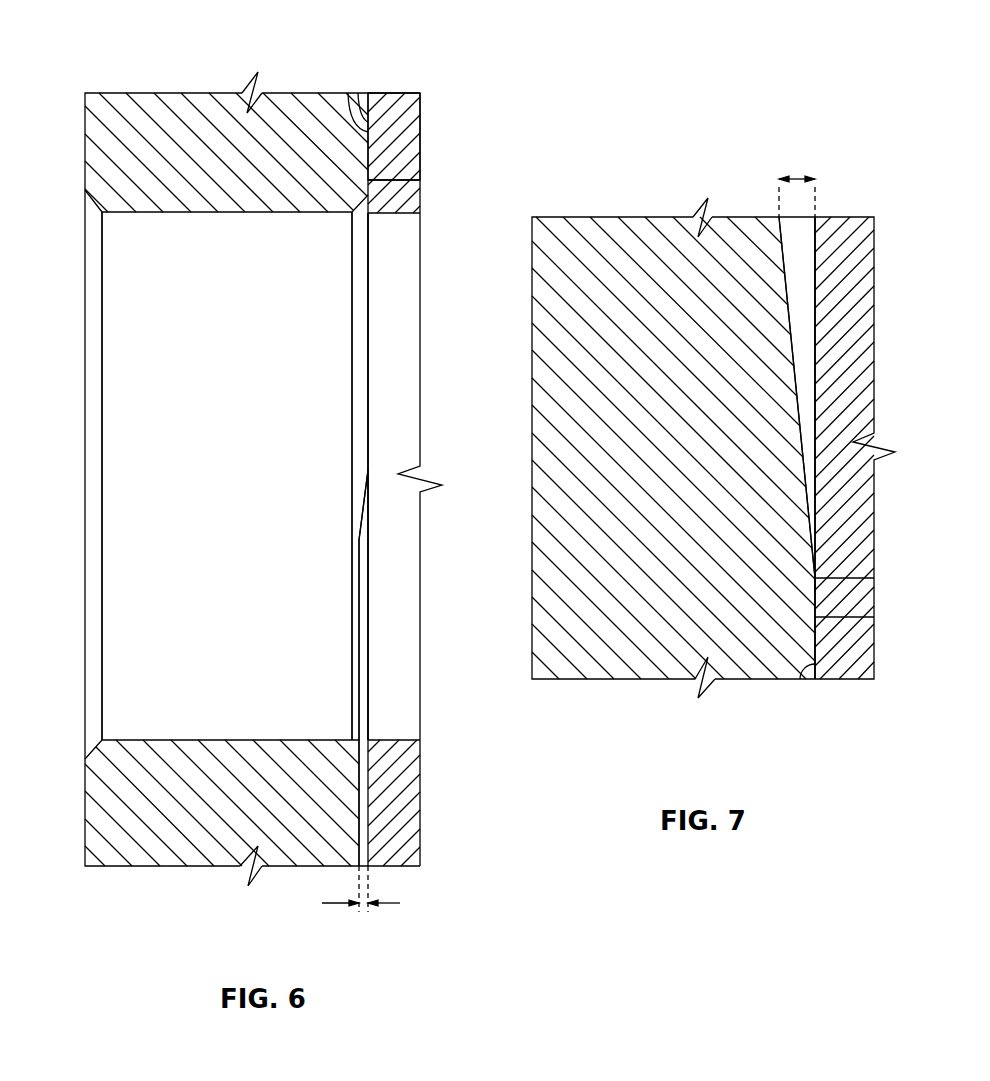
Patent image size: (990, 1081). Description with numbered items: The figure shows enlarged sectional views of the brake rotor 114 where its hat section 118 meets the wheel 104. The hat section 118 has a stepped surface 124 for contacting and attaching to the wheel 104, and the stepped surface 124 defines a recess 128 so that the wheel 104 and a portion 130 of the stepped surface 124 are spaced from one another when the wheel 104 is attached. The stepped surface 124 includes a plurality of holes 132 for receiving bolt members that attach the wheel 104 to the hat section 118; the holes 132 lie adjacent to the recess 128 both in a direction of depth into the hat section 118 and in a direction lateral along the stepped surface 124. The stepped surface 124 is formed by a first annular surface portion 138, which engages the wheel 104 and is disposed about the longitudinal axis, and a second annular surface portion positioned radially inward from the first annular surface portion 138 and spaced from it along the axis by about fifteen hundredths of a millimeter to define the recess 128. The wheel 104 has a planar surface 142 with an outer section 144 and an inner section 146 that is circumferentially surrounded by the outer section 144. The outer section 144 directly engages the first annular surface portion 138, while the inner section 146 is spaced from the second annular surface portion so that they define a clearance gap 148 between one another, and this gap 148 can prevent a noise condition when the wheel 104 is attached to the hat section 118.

In FIG. 6, the wheel 104 is at (408, 827).
In FIG. 7, the wheel 104 is at (853, 233).
In FIG. 6, the brake rotor 114 is at (174, 66).
In FIG. 7, the brake rotor 114 is at (611, 161).
In FIG. 6, the hat section 118 is at (85, 167).
In FIG. 7, the hat section 118 is at (532, 430).
In FIG. 6, the stepped surface 124 is at (420, 180).
In FIG. 7, the stepped surface 124 is at (875, 617).
In FIG. 6, the recess 128 is at (340, 903).
In FIG. 7, the recess 128 is at (797, 178).
In FIG. 6, the portion of the stepped surface 130 is at (359, 853).
In FIG. 7, the portion of the stepped surface 130 is at (779, 250).
In FIG. 6, the holes 132 is at (150, 213).
In FIG. 6, the first annular surface portion 138 is at (377, 110).
In FIG. 7, the first annular surface portion 138 is at (875, 578).
In FIG. 6, the planar surface 142 is at (360, 117).
In FIG. 7, the planar surface 142 is at (800, 680).
In FIG. 6, the outer section 144 is at (352, 118).
In FIG. 7, the outer section 144 is at (812, 592).
In FIG. 6, the inner section 146 is at (363, 830).
In FIG. 7, the inner section 146 is at (779, 283).
In FIG. 6, the clearance gap 148 is at (384, 889).
In FIG. 7, the clearance gap 148 is at (806, 196).